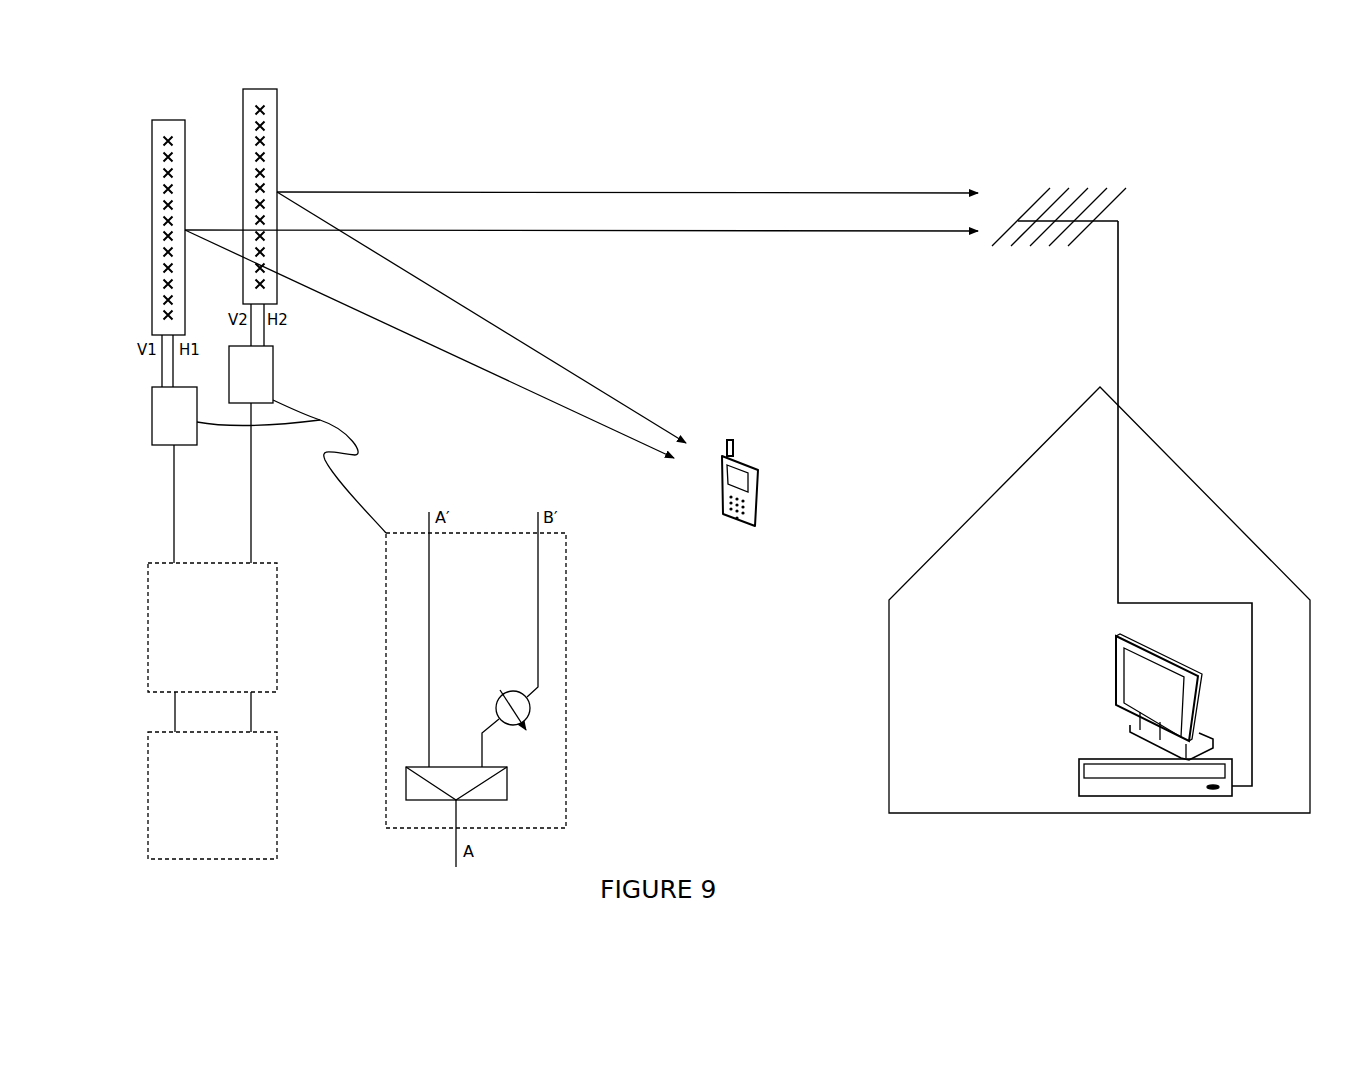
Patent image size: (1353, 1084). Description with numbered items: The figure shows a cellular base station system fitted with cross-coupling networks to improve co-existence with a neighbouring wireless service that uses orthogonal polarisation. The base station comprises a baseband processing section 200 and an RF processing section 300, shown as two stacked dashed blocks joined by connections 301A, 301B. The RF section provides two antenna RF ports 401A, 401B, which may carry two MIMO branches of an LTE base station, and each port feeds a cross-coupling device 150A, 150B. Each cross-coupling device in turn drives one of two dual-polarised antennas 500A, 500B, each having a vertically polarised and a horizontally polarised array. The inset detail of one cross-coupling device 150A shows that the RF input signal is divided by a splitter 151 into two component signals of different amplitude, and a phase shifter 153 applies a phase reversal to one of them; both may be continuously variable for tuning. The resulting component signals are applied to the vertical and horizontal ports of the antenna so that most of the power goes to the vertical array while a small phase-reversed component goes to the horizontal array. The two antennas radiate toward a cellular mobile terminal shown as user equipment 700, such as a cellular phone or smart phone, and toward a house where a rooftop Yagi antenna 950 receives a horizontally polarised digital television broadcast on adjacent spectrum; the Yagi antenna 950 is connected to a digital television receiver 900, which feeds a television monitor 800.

The dual-polarised antenna 500A is at (152, 175).
The second dual-polarised antenna 500B is at (277, 147).
The cross-coupling device 150A is at (152, 437).
The second cross-coupling device 150B is at (273, 365).
The antenna RF port 401A is at (174, 545).
The second antenna RF port 401B is at (251, 546).
The RF processing section 300 is at (275, 676).
The first transceiver output 301A is at (167, 718).
The second transceiver output 301B is at (260, 718).
The baseband processing section 200 is at (275, 841).
The splitter 151 is at (507, 795).
The phase shifter 153 is at (513, 692).
The user equipment 700 is at (740, 528).
The Yagi antenna 950 is at (1120, 235).
The television monitor 800 is at (1116, 677).
The digital television receiver 900 is at (1079, 778).